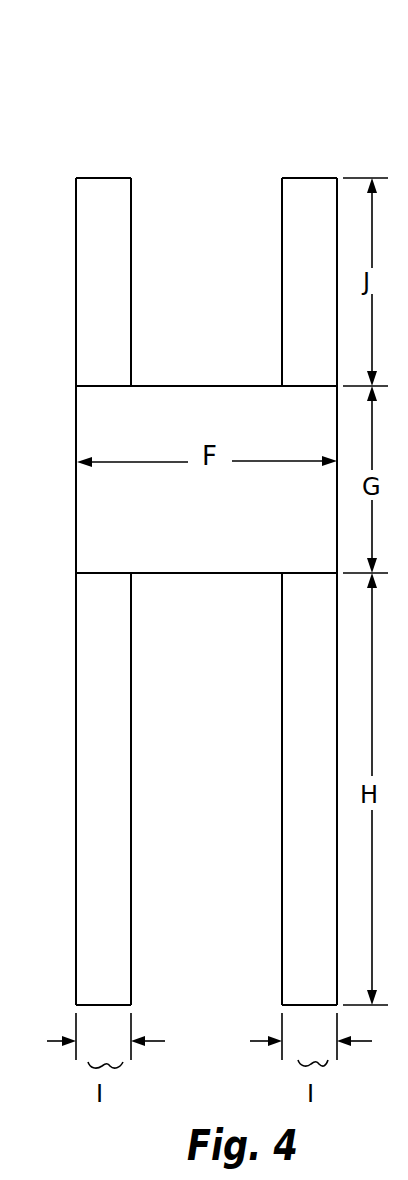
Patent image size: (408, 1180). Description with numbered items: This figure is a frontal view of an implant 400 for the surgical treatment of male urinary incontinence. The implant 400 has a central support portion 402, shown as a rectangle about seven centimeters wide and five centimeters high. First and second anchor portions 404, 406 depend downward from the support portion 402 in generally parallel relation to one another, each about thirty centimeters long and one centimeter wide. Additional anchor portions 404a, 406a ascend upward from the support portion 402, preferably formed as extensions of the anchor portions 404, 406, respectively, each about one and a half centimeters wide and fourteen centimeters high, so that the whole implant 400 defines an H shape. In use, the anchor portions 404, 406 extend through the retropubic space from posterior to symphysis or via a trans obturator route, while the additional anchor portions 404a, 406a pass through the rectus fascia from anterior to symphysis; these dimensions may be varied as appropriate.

The implant 400 is at (186, 82).
The support portion 402 is at (86, 519).
The first anchor portion 404 is at (122, 835).
The first additional anchor portion 404a is at (118, 245).
The second anchor portion 406 is at (297, 769).
The second additional anchor portion 406a is at (291, 238).